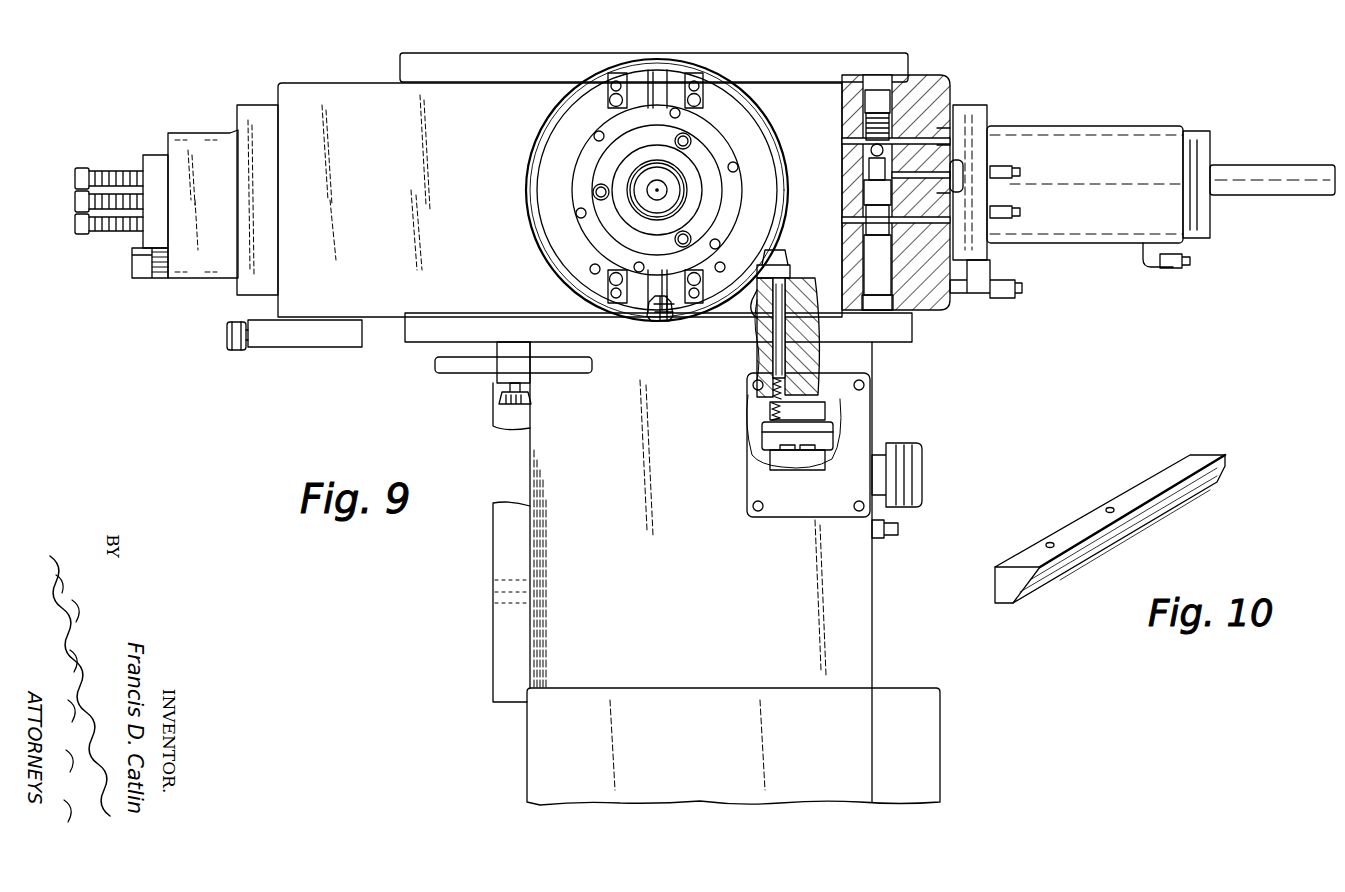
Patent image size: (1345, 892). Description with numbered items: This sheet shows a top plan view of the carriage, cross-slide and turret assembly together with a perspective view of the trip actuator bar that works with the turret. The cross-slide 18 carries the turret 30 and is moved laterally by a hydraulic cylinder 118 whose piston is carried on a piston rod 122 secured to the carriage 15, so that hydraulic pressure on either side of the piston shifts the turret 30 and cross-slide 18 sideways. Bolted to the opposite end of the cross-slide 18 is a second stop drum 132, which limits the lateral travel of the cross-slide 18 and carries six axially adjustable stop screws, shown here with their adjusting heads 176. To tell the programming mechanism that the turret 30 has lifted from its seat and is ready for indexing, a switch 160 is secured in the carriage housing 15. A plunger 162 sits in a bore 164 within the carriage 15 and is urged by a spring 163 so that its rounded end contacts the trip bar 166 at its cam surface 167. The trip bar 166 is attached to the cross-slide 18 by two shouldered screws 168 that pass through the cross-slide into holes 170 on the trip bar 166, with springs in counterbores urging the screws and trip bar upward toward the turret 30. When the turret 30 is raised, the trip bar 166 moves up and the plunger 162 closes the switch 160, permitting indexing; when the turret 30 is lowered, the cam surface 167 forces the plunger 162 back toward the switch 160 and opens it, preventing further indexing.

In FIG. 9, the cross-slide 18 is at (926, 336).
In FIG. 9, the carriage 15 is at (853, 610).
In FIG. 9, the turret 30 is at (752, 138).
In FIG. 9, the screws 168 is at (725, 264).
In FIG. 9, the second stop drum 132 is at (204, 142).
In FIG. 9, the adjusting screws 176 is at (72, 172).
In FIG. 9, the hydraulic cylinder 118 is at (1088, 138).
In FIG. 9, the piston rod 122 is at (1278, 175).
In FIG. 9, the trip bar 166 is at (790, 266).
In FIG. 10, the trip bar 166 is at (1188, 448).
In FIG. 9, the plunger 162 is at (792, 292).
In FIG. 9, the bore 164 is at (776, 376).
In FIG. 9, the cam surface 167 is at (756, 300).
In FIG. 10, the cam surface 167 is at (1148, 512).
In FIG. 9, the spring 163 is at (768, 410).
In FIG. 9, the switch 160 is at (762, 445).
In FIG. 10, the holes 170 is at (1052, 541).